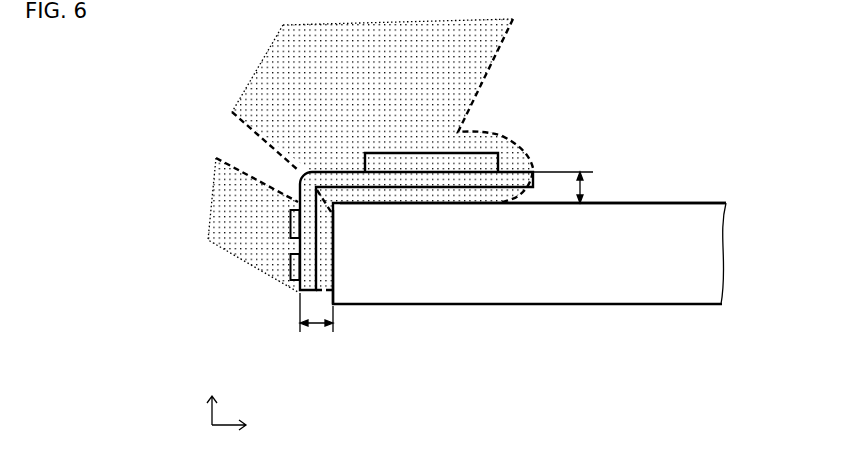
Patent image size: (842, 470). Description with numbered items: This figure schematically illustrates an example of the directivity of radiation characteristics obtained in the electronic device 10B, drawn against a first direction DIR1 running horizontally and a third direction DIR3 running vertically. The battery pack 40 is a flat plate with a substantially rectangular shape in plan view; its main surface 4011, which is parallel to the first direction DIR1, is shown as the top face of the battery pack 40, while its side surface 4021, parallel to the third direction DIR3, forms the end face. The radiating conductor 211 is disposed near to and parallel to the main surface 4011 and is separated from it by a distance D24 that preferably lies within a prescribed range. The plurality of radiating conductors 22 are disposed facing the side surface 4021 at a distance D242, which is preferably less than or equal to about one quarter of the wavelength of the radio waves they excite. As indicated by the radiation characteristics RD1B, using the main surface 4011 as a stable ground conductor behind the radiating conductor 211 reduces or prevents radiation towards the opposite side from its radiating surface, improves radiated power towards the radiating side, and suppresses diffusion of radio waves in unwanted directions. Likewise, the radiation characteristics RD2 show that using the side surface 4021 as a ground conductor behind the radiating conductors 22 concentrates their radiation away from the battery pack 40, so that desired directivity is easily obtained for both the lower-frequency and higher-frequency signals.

The electronic device 10B is at (743, 43).
The radiating conductor 211 is at (487, 162).
The radiating conductors 22 is at (289, 280).
The battery pack 40 is at (652, 295).
The main surface 4011 is at (713, 201).
The side surface 4021 is at (335, 289).
The radiation characteristics RD1B is at (493, 48).
The radiation characteristics RD2 is at (246, 226).
The distance D24 is at (579, 187).
The distance D242 is at (319, 330).
The first direction DIR1 is at (255, 425).
The third direction DIR3 is at (212, 396).